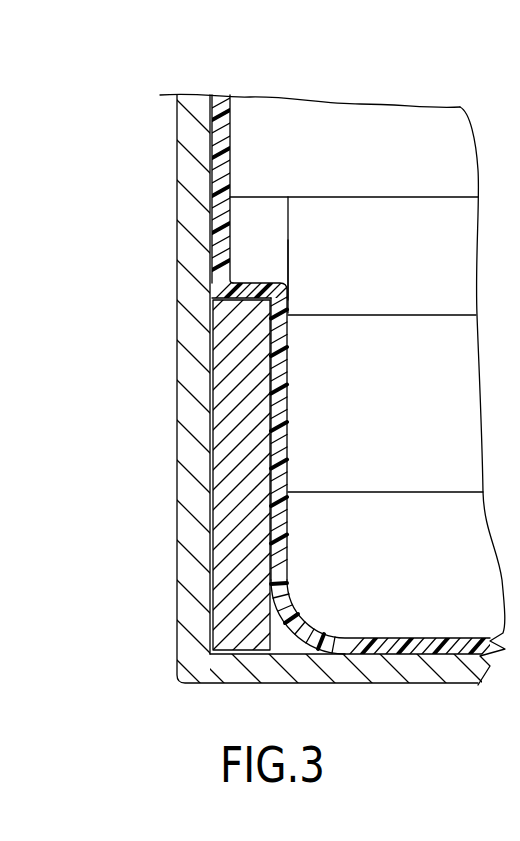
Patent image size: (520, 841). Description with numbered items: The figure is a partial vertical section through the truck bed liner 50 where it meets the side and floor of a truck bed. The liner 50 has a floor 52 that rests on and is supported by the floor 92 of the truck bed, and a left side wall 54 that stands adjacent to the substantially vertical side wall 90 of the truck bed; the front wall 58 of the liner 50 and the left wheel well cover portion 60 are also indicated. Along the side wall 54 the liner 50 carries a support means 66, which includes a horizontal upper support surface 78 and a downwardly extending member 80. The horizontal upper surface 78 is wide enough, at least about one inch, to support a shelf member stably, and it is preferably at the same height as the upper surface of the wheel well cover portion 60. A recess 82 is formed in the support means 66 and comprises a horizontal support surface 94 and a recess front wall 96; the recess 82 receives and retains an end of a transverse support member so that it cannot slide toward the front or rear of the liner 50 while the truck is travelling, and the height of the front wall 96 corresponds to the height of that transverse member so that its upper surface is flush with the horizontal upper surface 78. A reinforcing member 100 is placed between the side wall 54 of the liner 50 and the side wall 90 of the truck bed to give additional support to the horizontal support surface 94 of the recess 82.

The truck bed liner 50 is at (316, 67).
The floor 52 is at (417, 646).
The left side wall 54 is at (217, 207).
The front wall 58 is at (388, 123).
The left wheel well cover portion 60 is at (455, 280).
The support means 66 is at (295, 460).
The horizontal upper support surface 78 is at (305, 150).
The downwardly extending member 80 is at (280, 423).
The recess 82 is at (294, 262).
The side wall of truck bed 90 is at (190, 510).
The floor of truck bed 92 is at (400, 676).
The horizontal support surface 94 is at (247, 283).
The recess front wall 96 is at (276, 240).
The reinforcing member 100 is at (255, 353).